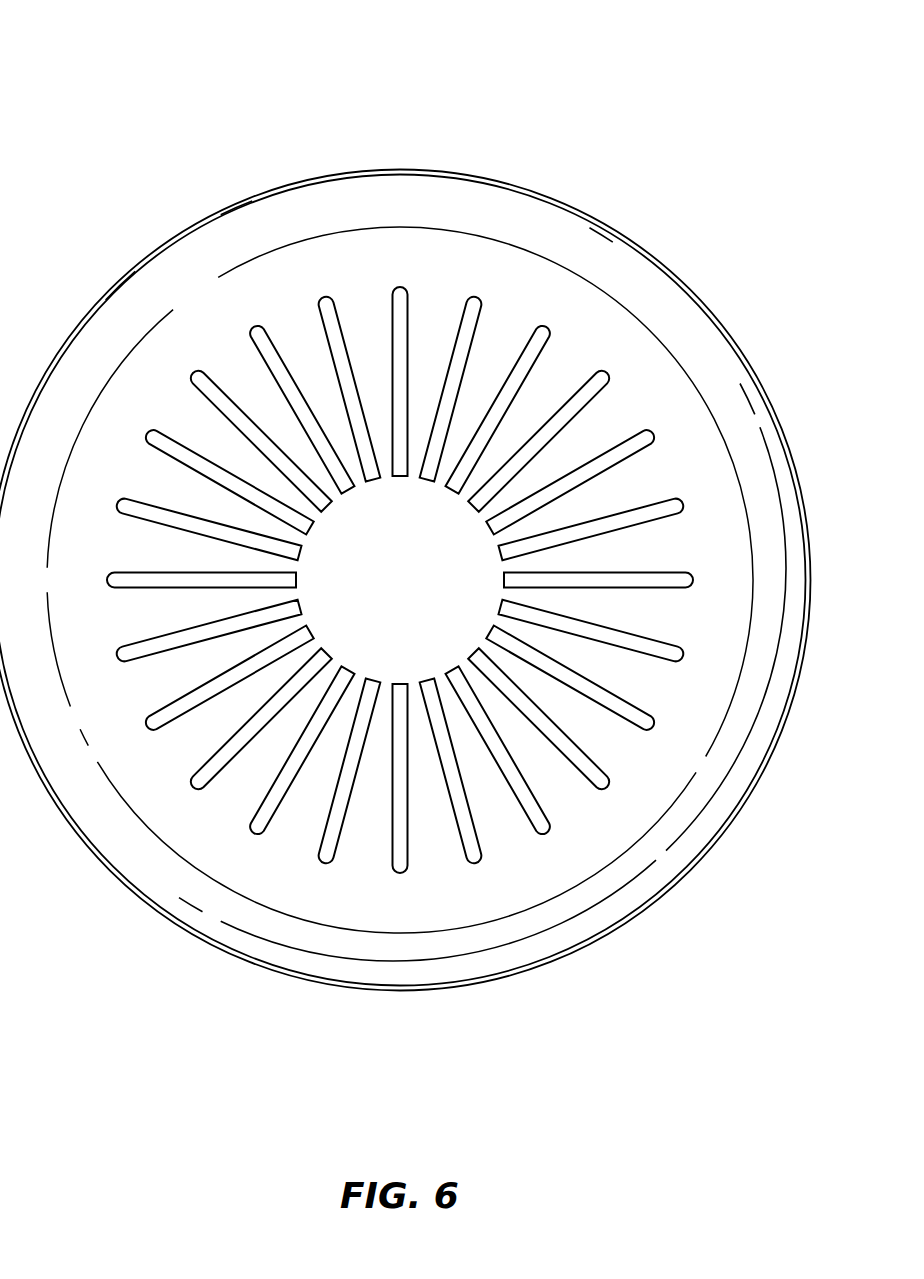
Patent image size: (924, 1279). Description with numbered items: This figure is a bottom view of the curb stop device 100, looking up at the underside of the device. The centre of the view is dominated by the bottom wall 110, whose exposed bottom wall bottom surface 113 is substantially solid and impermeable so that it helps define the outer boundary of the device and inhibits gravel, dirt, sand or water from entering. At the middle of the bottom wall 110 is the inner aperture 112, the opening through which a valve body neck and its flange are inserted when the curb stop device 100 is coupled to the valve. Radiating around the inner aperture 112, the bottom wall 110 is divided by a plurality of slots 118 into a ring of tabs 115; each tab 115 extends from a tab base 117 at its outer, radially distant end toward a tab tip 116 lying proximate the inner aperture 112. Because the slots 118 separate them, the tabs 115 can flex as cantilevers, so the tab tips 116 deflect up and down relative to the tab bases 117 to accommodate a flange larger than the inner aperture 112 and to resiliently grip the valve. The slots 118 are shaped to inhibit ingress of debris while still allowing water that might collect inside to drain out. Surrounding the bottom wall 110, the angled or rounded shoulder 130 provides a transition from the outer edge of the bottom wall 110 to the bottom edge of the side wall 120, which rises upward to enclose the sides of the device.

The curb stop device 100 is at (130, 64).
The bottom wall 110 is at (583, 308).
The inner aperture 112 is at (375, 567).
The bottom wall bottom surface 113 is at (224, 310).
The tabs 115 is at (368, 340).
The tab tips 116 is at (465, 497).
The tab bases 117 is at (607, 422).
The slots 118 is at (375, 672).
The side wall 120 is at (683, 280).
The shoulder 130 is at (698, 350).